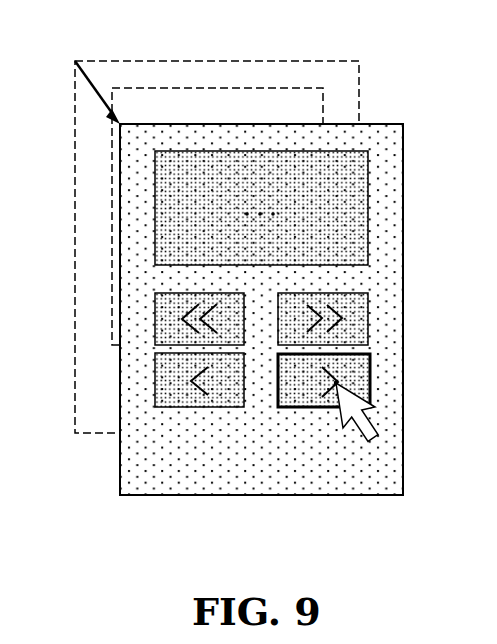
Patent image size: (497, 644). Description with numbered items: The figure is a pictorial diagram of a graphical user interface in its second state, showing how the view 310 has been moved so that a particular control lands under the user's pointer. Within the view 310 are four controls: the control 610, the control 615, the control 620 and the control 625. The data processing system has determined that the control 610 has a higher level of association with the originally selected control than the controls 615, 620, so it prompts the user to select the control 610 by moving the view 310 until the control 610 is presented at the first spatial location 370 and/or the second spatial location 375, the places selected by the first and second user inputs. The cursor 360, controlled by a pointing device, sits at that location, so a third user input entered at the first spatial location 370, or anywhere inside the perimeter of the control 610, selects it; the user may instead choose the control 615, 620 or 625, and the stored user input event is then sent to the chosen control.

The view 310 is at (307, 61).
The cursor 360 is at (365, 400).
The first spatial location 370 is at (336, 384).
The second spatial location 375 is at (337, 386).
The control 610 is at (350, 368).
The control 615 is at (155, 380).
The control 620 is at (366, 318).
The control 625 is at (153, 310).